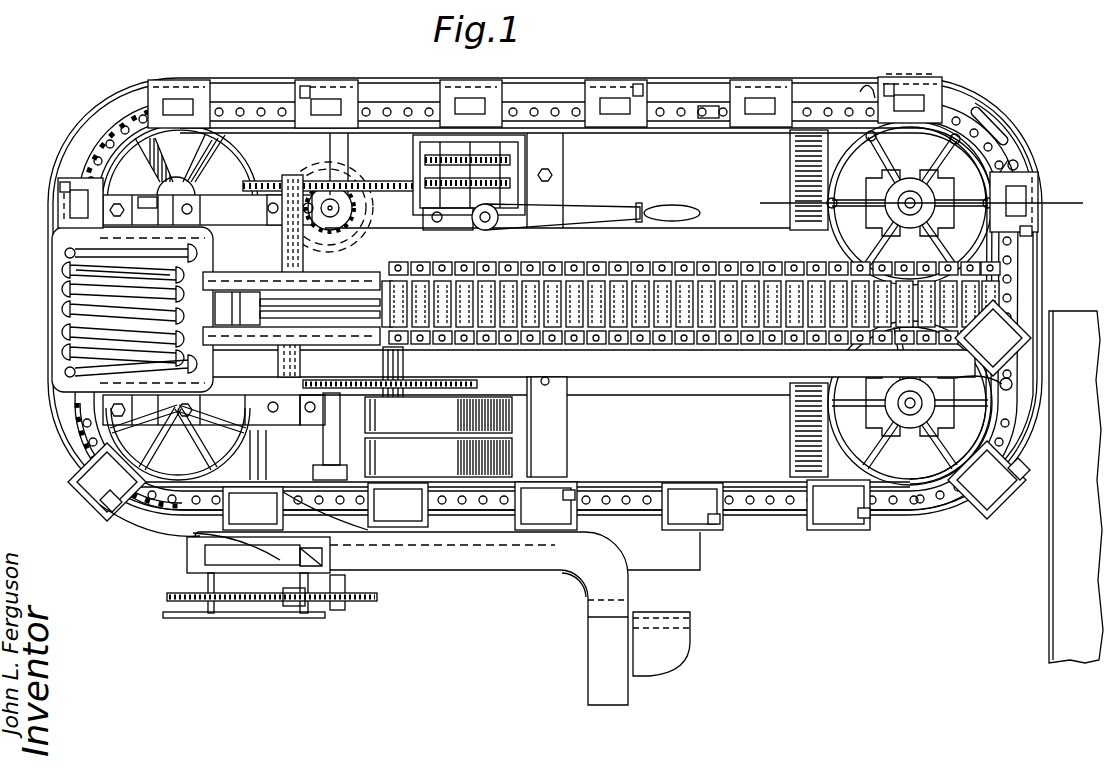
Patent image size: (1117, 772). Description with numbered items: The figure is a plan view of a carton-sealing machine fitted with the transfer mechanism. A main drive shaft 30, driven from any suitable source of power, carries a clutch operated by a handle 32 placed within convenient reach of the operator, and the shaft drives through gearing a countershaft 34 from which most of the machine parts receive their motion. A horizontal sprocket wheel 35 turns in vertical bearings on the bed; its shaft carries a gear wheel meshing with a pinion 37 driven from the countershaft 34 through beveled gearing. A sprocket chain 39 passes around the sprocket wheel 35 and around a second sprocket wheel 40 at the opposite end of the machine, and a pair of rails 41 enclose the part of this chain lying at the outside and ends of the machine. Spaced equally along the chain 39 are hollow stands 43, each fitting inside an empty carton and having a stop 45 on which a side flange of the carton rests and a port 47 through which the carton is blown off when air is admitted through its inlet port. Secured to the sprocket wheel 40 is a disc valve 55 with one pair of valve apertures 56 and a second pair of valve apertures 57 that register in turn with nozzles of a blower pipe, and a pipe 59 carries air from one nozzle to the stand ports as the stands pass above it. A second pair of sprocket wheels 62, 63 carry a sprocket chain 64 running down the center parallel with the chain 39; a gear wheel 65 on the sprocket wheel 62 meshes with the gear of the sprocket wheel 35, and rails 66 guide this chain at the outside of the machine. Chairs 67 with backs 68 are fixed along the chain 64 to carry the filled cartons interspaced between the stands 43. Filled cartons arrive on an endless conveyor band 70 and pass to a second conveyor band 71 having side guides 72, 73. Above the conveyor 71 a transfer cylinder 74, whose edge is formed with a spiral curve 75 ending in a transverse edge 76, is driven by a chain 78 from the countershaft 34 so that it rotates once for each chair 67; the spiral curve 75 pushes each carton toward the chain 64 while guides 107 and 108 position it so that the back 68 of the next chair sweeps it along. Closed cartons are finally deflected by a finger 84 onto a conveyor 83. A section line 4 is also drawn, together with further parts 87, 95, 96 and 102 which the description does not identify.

The section line 4- 4 is at (778, 214).
The main drive shaft 30 is at (452, 555).
The handle 32 is at (612, 212).
The countershaft 34 is at (333, 433).
The sprocket wheel 35 is at (113, 163).
The pinion 37 is at (377, 215).
The sprocket chain 39 is at (686, 107).
The second sprocket wheel 40 is at (850, 157).
The rails 41 is at (708, 117).
The hollow stand 43 is at (302, 98).
The stop 45 is at (923, 78).
The port 47 is at (182, 100).
The disc valve 55 is at (823, 137).
The valve apertures 56 is at (1013, 165).
The valve apertures 57 is at (873, 95).
The pipe 59 is at (1002, 125).
The sprocket wheel 62 is at (77, 423).
The sprocket wheel 63 is at (850, 435).
The sprocket chain 64 is at (622, 497).
The gear wheel 65 is at (82, 440).
The rails 66 is at (755, 497).
The chairs 67 is at (97, 488).
The backs 68 is at (107, 508).
The endless conveyor band 70 is at (597, 652).
The second endless conveyor band 71 is at (490, 562).
The side guide 72 is at (583, 597).
The side guide 73 is at (628, 590).
The transfer cylinder 74 is at (293, 606).
The spiral curve 75 is at (280, 558).
The transverse edge 76 is at (315, 565).
The chain 78 is at (268, 601).
The conveyor 83 is at (1076, 487).
The finger 84 is at (1010, 388).
The pusher 87 is at (238, 390).
The rack bar 95 is at (388, 182).
The gear box 96 is at (500, 155).
The work holder 102 is at (915, 312).
The guide 107 is at (298, 488).
The guide 108 is at (200, 550).